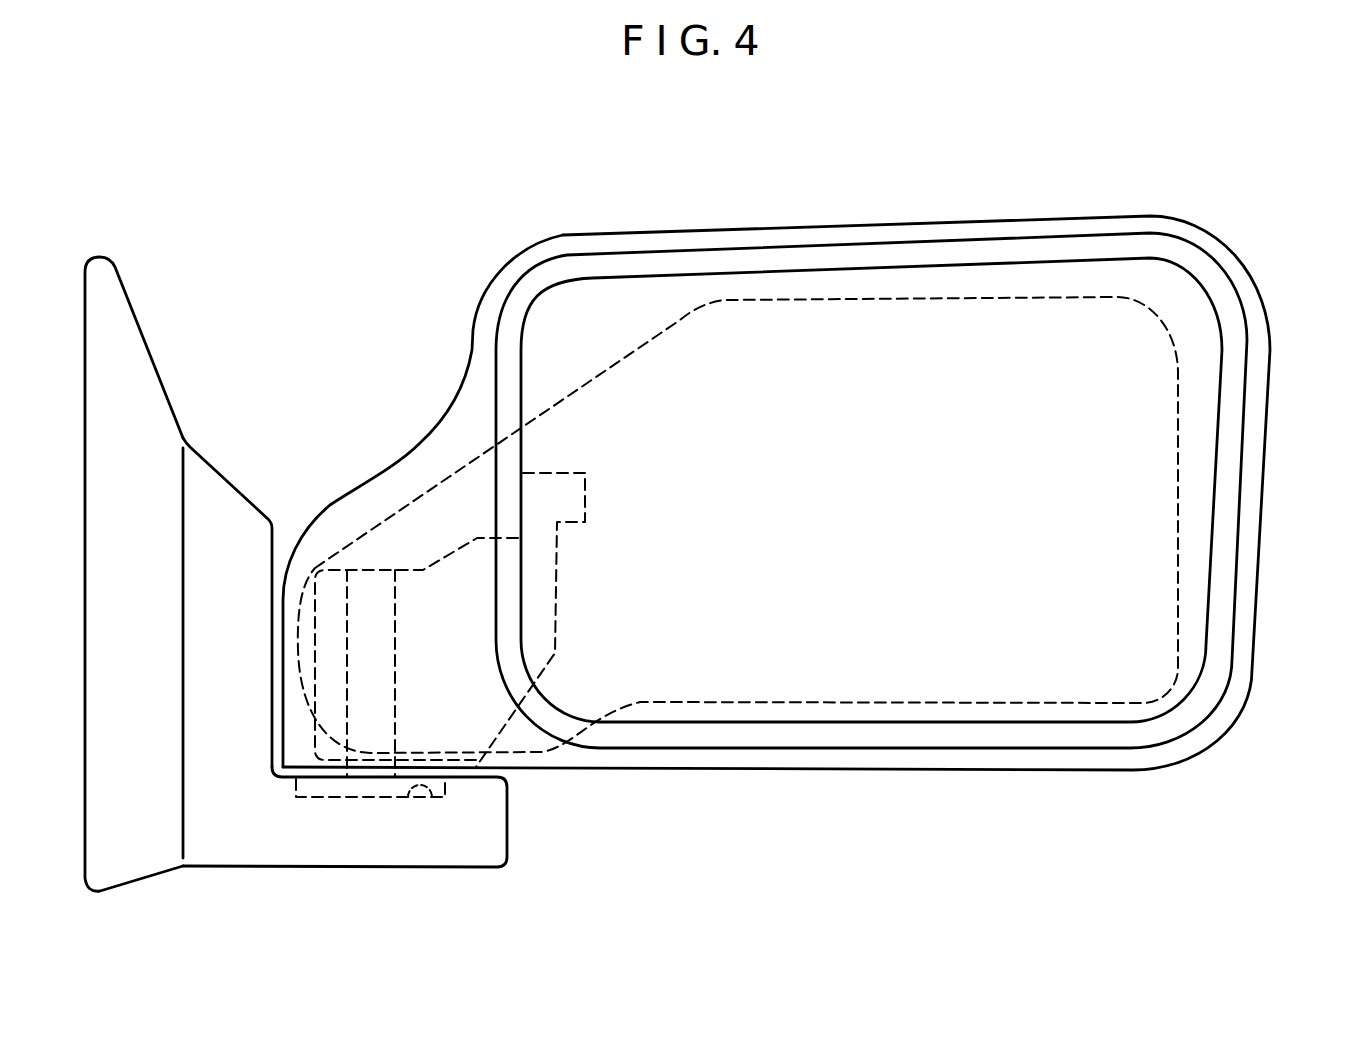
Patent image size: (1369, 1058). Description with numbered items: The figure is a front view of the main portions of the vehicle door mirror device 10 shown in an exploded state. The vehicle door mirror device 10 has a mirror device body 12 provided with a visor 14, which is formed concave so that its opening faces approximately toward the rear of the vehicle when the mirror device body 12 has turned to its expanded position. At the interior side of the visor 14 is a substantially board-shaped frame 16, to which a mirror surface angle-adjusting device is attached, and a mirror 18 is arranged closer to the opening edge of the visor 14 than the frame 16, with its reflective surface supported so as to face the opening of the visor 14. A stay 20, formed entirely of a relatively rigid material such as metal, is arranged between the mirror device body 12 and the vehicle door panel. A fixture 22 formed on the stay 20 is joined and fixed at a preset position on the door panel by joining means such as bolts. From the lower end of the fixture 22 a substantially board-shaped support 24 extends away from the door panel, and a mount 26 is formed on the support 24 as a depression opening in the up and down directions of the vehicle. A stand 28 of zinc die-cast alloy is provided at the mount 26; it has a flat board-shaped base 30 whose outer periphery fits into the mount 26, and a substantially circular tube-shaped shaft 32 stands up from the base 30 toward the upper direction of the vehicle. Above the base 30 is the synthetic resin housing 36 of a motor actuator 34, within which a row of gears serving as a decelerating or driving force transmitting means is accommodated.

The vehicle door mirror device 10 is at (318, 250).
The mirror device body 12 is at (458, 342).
The visor 14 is at (1262, 497).
The frame 16 is at (1180, 553).
The mirror 18 is at (1195, 617).
The stay 20 is at (225, 455).
The fixture 22 is at (113, 268).
The support 24 is at (345, 868).
The mount 26 is at (428, 800).
The stand 28 is at (330, 678).
The base 30 is at (343, 797).
The shaft 32 is at (407, 643).
The motor actuator 34 is at (738, 525).
The housing 36 is at (578, 555).